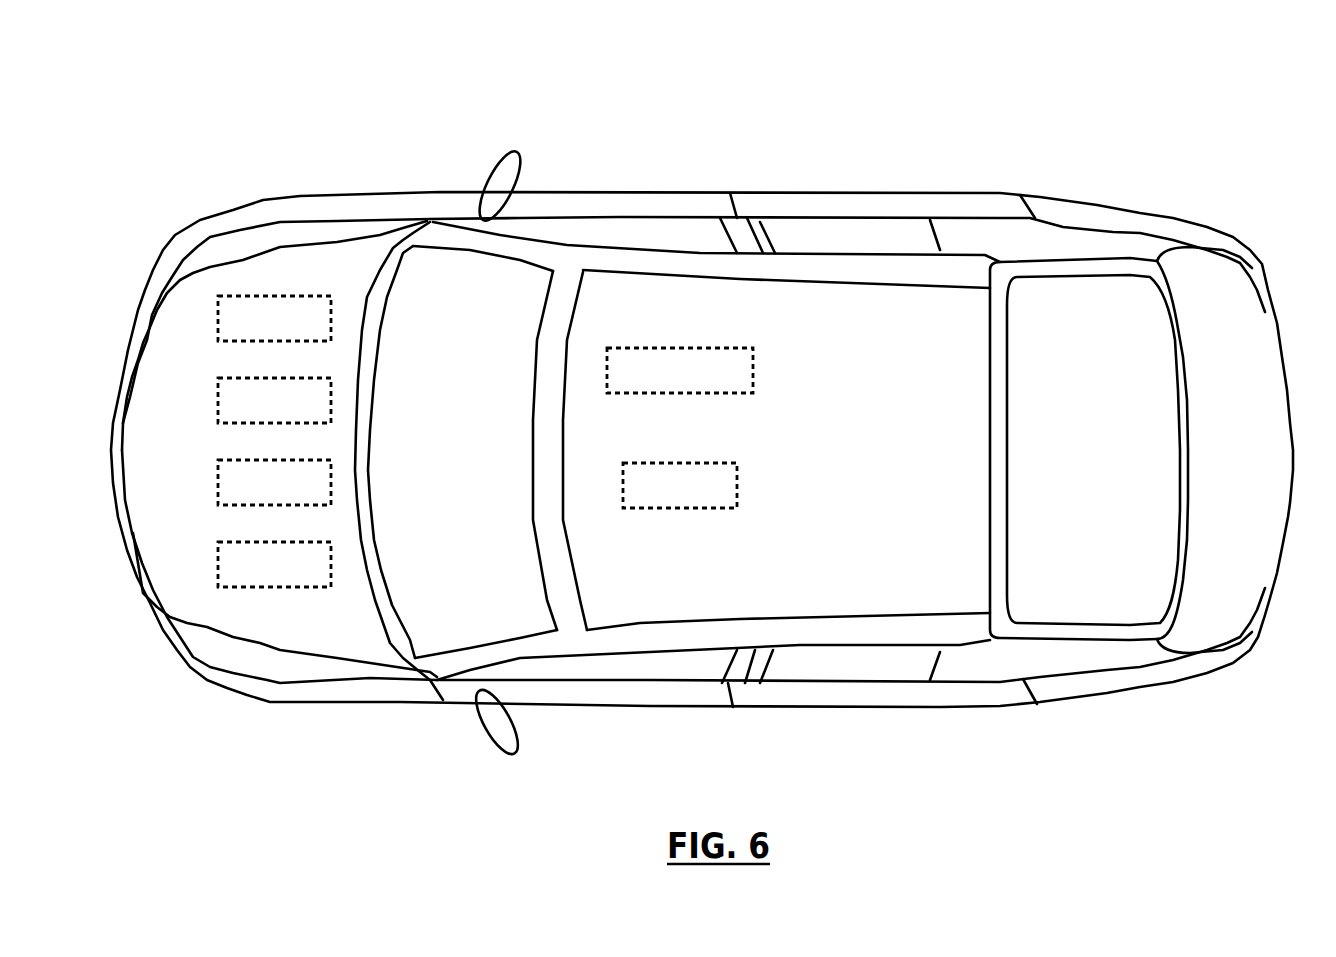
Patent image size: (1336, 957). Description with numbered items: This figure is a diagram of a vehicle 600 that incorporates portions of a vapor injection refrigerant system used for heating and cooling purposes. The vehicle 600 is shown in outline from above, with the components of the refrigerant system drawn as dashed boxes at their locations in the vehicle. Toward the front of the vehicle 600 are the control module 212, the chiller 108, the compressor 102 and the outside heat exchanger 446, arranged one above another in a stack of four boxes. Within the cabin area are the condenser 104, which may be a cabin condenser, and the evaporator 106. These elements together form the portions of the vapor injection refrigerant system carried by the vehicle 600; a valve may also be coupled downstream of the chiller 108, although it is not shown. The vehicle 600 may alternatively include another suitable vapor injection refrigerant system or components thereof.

The vehicle 600 is at (306, 82).
The control module 212 is at (282, 296).
The chiller 108 is at (218, 402).
The compressor 102 is at (218, 487).
The outside heat exchanger 446 is at (283, 587).
The condenser 104 is at (677, 393).
The evaporator 106 is at (680, 508).